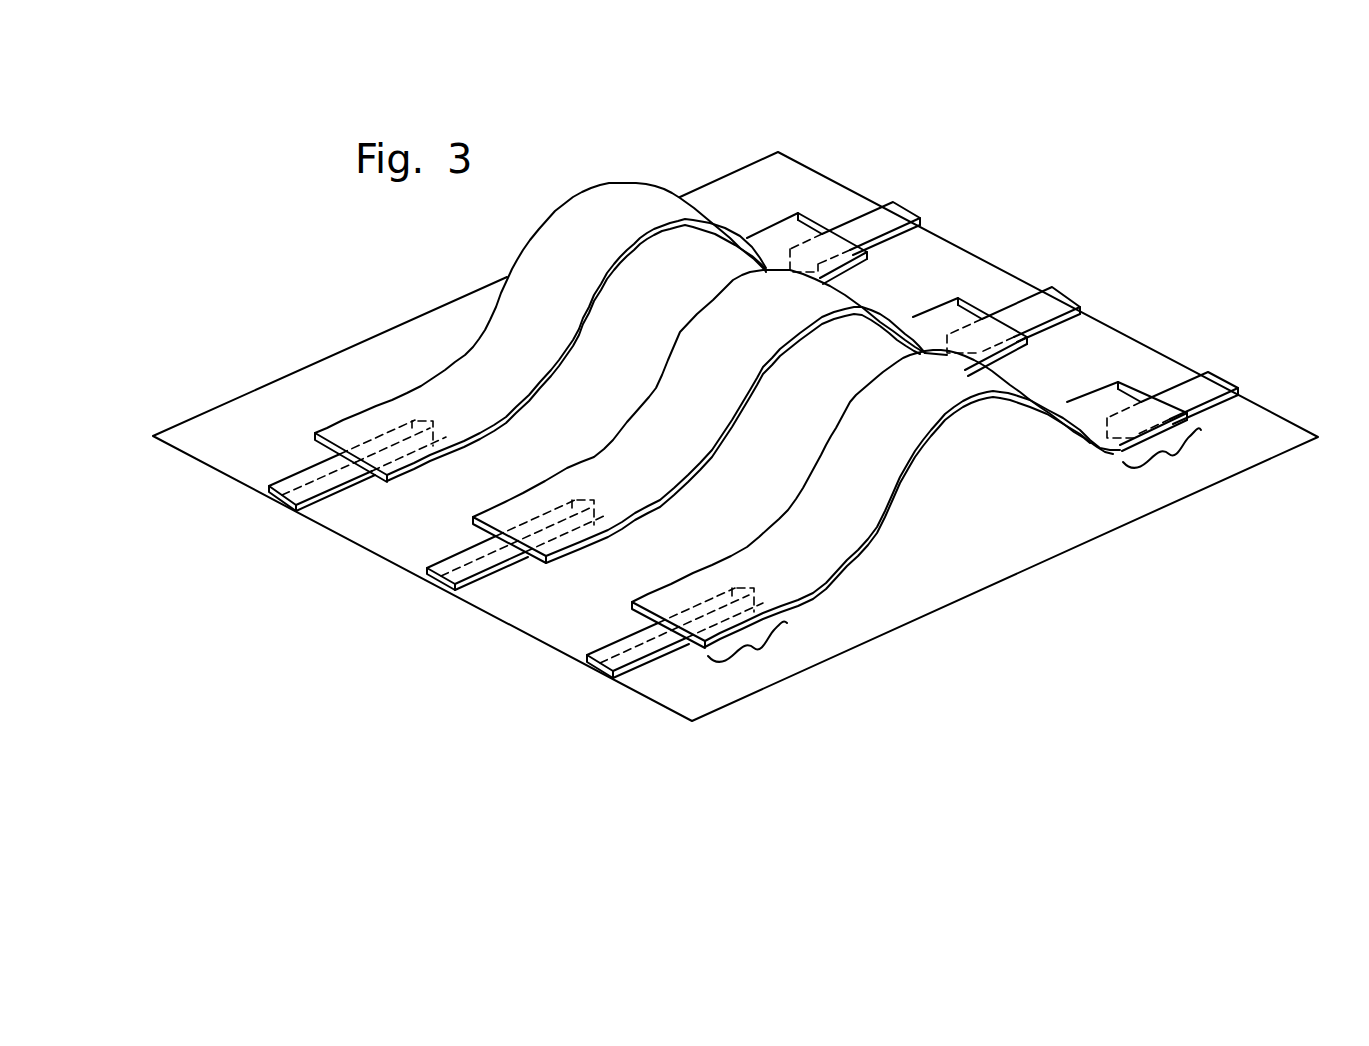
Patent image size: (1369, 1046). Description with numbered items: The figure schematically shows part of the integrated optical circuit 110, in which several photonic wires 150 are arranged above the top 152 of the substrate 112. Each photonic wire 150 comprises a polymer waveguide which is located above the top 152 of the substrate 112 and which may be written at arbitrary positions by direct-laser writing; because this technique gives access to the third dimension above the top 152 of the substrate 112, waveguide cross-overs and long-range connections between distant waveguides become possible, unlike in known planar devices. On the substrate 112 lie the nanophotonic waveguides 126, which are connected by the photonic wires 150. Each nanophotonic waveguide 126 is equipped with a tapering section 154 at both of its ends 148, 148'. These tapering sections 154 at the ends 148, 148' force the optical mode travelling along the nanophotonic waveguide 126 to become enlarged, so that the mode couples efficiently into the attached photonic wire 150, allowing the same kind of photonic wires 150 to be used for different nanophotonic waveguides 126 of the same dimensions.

The integrated optical circuit 110 is at (735, 449).
The substrate 112 is at (735, 436).
The top of the substrate 152 is at (572, 602).
The nanophotonic waveguide 126 is at (608, 666).
The end of nanophotonic waveguide 148 is at (900, 524).
The end of waveguide 148' is at (852, 545).
The photonic wire 150 is at (741, 441).
The tapering section 154 is at (1078, 663).